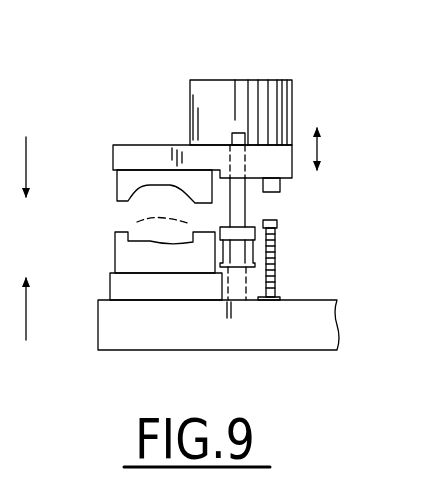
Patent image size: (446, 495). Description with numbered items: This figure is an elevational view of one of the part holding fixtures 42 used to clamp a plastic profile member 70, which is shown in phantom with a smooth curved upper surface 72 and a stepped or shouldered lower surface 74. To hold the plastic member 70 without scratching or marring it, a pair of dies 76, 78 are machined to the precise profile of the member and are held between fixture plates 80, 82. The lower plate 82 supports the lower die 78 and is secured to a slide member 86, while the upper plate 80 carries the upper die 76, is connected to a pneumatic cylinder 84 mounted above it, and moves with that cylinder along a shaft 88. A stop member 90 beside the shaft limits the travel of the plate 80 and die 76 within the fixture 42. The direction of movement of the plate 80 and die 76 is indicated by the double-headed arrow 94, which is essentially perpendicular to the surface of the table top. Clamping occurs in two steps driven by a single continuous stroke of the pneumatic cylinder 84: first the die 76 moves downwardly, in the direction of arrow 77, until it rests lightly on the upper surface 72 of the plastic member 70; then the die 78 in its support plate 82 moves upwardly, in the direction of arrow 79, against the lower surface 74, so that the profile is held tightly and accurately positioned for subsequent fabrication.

The part holding fixture 42 is at (186, 102).
The plastic profile member 70 is at (128, 265).
The upper surface 72 is at (132, 222).
The lower surface 74 is at (160, 238).
The die 76 is at (147, 176).
The arrow 77 is at (26, 165).
The die 78 is at (127, 247).
The arrow 79 is at (26, 320).
The fixture plate 80 is at (155, 143).
The fixture plate 82 is at (163, 287).
The pneumatic cylinder 84 is at (258, 83).
The slide member 86 is at (275, 337).
The shaft 88 is at (245, 203).
The stop member 90 is at (278, 257).
The arrow 94 is at (320, 145).